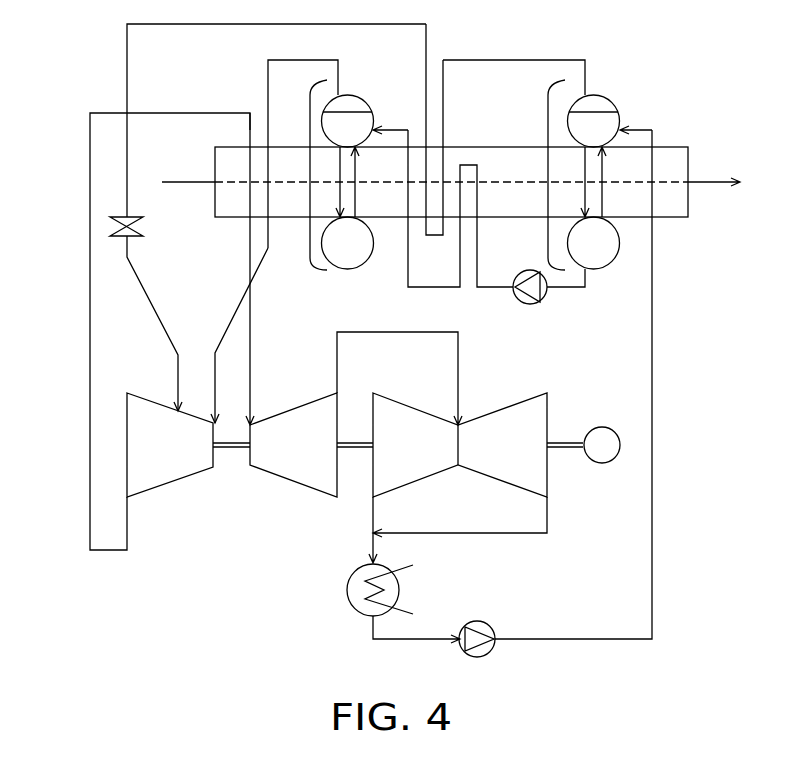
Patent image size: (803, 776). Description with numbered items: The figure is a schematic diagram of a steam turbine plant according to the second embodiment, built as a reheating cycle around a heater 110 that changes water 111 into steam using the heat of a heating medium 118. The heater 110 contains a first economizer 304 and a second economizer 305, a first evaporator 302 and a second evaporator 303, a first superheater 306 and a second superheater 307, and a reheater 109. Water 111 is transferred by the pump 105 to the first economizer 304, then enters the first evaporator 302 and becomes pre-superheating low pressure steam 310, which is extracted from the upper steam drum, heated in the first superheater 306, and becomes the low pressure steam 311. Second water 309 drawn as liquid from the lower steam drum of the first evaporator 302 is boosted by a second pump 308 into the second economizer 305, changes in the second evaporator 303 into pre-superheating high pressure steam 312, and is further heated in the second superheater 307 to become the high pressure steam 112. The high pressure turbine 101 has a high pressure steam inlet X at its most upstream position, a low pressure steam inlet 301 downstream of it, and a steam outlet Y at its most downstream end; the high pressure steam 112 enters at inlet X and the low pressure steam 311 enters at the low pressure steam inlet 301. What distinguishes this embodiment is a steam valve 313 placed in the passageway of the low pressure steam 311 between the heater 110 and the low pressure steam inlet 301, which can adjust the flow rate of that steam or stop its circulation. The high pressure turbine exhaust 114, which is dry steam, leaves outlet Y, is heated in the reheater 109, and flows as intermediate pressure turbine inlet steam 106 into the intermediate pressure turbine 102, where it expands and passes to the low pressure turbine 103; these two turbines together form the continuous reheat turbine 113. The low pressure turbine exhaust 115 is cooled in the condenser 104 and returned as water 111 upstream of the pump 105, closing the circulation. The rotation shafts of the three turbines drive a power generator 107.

The high pressure turbine 101 is at (173, 485).
The intermediate pressure turbine 102 is at (290, 480).
The low pressure turbine 103 is at (520, 402).
The condenser 104 is at (347, 592).
The pump 105 is at (477, 621).
The intermediate pressure turbine inlet steam 106 is at (250, 363).
The power generator 107 is at (602, 427).
The reheater 109 is at (250, 205).
The heater 110 is at (690, 163).
The water 111 is at (580, 639).
The high pressure steam 112 is at (233, 318).
The reheat turbine 113 is at (478, 378).
The high pressure turbine exhaust 114 is at (90, 338).
The low pressure turbine exhaust 115 is at (373, 515).
The heating medium 118 is at (190, 180).
The low pressure steam inlet 301 is at (174, 404).
The first evaporator 302 is at (548, 182).
The second evaporator 303 is at (310, 182).
The first economizer 304 is at (652, 160).
The second economizer 305 is at (408, 198).
The first superheater 306 is at (443, 163).
The second superheater 307 is at (268, 150).
The second pump 308 is at (530, 270).
The second water 309 is at (567, 287).
The pre-superheating low pressure steam 310 is at (512, 60).
The low pressure steam 311 is at (127, 70).
The pre-superheating high pressure steam 312 is at (338, 73).
The steam valve 313 is at (110, 226).
The high pressure steam inlet X is at (216, 420).
The steam outlet Y is at (125, 497).